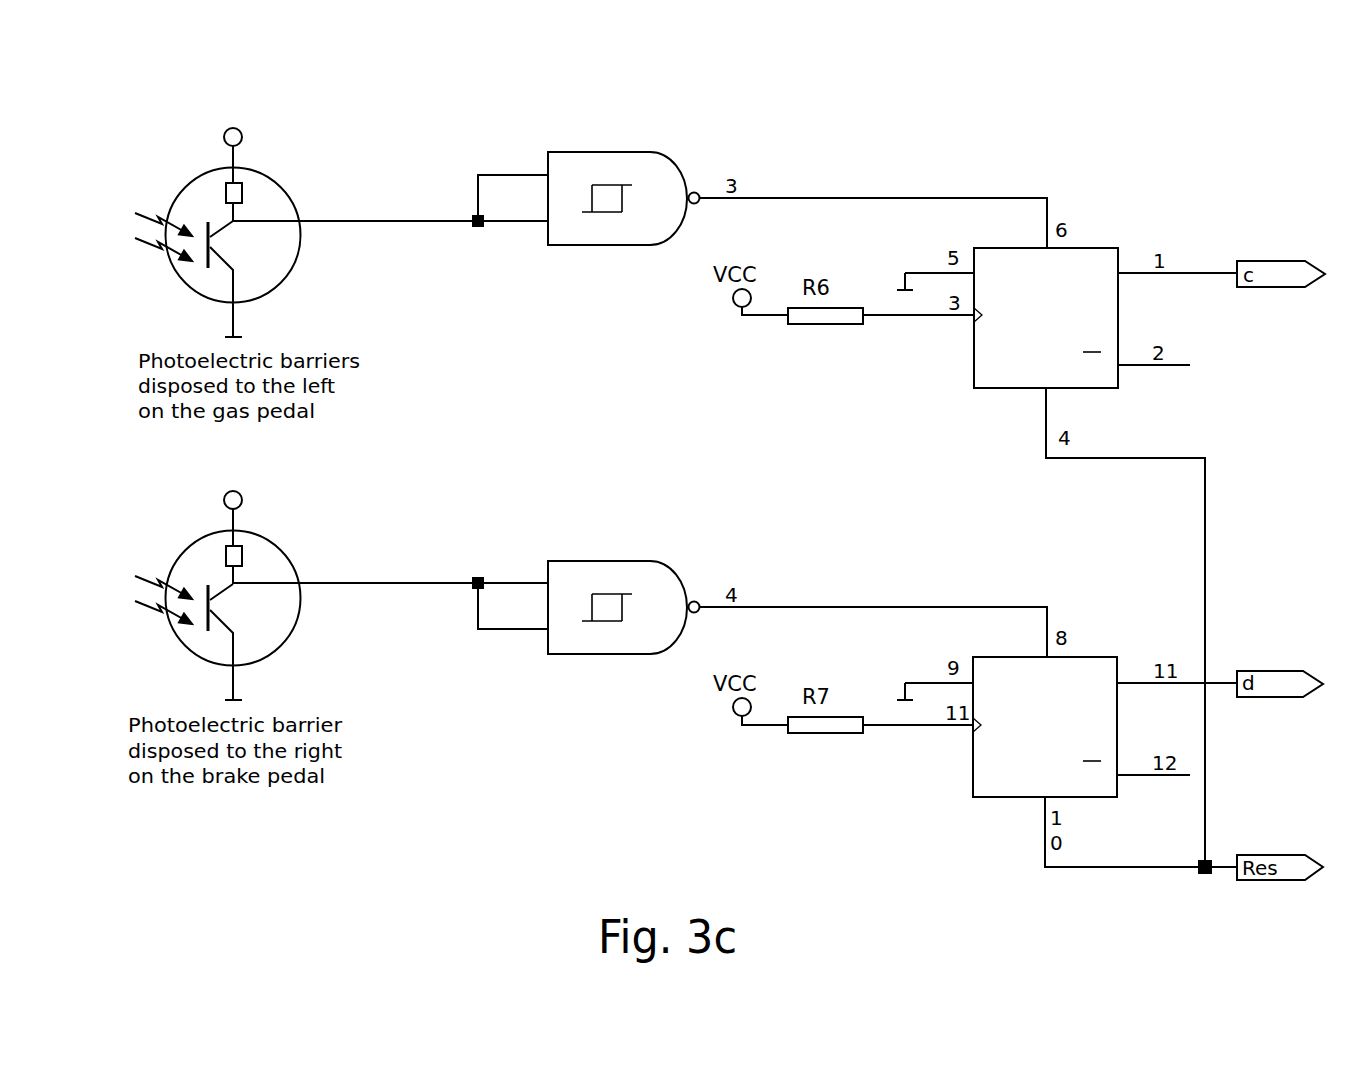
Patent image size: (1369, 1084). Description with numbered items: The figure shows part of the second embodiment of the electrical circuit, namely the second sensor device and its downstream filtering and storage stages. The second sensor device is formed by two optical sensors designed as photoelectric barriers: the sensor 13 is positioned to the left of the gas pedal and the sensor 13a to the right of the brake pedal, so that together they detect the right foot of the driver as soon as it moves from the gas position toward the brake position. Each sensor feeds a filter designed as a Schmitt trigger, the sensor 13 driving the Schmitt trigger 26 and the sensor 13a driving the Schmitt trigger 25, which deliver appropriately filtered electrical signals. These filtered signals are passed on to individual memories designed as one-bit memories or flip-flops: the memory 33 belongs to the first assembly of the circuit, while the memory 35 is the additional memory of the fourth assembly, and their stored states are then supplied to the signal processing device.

The optical sensor 13 is at (268, 197).
The optical sensor 13a is at (268, 558).
The Schmitt trigger 26 is at (653, 171).
The Schmitt trigger 25 is at (652, 580).
The memory 33 is at (1110, 258).
The memory 35 is at (1110, 667).